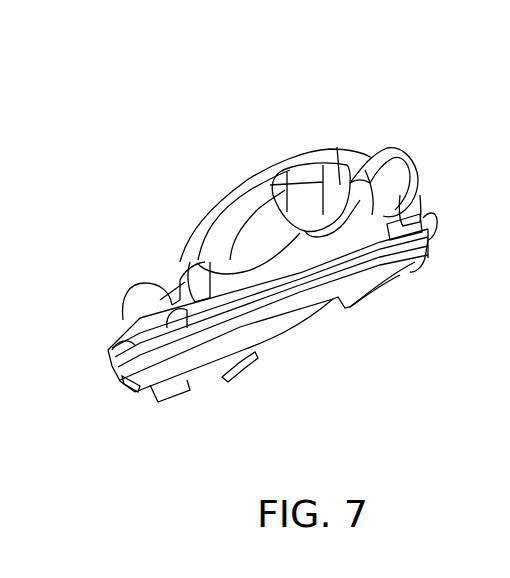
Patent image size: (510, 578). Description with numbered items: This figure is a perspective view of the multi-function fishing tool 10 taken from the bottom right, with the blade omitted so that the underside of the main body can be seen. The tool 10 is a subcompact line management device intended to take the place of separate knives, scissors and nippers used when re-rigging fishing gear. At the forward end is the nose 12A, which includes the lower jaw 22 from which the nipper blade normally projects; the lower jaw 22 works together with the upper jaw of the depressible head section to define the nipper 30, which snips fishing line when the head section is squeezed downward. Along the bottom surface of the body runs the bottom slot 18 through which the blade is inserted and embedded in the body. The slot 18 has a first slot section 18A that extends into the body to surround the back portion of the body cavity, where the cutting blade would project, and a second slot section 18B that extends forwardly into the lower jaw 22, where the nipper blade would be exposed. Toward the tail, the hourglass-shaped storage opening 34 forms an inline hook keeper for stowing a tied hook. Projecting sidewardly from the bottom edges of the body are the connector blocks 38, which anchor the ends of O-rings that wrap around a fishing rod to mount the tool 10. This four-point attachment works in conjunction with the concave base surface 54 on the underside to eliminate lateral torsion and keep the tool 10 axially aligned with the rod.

The multi-function fishing tool 10 is at (128, 172).
The nose 12A is at (389, 113).
The bottom slot 18 is at (279, 303).
The first slot section 18A is at (260, 220).
The second slot section 18B is at (347, 263).
The lower jaw 22 is at (373, 257).
The nipper 30 is at (360, 108).
The storage opening 34 is at (180, 308).
The connector blocks 38 is at (375, 202).
The concave base surface 54 is at (187, 387).